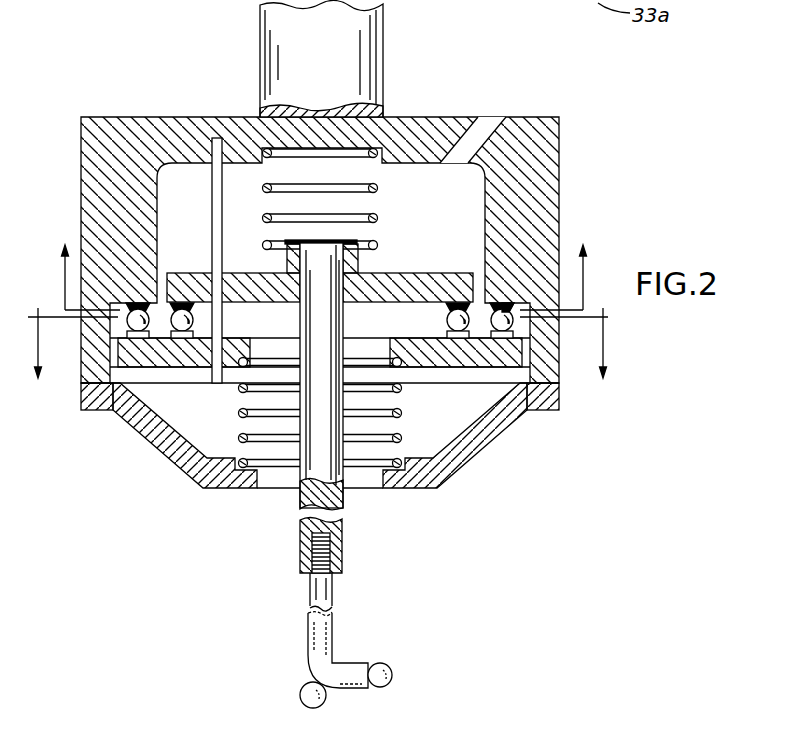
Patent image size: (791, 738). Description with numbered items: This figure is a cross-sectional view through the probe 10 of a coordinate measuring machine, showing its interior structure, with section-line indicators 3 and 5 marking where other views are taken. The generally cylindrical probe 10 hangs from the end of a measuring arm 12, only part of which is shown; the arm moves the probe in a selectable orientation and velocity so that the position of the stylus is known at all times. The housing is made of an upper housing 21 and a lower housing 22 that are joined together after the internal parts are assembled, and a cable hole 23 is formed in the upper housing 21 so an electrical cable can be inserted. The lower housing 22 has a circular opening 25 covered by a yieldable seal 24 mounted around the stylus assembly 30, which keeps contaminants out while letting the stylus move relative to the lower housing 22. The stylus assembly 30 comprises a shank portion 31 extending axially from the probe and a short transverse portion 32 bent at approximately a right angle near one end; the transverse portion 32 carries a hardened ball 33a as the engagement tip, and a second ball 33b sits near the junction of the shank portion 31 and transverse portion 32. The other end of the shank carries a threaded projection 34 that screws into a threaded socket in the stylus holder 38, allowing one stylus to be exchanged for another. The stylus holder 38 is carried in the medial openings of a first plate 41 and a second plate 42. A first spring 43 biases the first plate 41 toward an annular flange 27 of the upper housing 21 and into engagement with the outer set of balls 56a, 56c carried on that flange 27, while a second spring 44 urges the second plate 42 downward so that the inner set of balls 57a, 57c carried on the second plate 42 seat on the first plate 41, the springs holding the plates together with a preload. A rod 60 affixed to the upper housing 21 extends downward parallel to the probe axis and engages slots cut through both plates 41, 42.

The probe 10 is at (150, 547).
The measuring arm 12 is at (374, 64).
The upper housing 21 is at (135, 186).
The lower housing 22 is at (117, 411).
The cable hole 23 is at (483, 127).
The seal 24 is at (283, 482).
The circular opening 25 is at (383, 483).
The annular flange 27 is at (503, 303).
The stylus assembly 30 is at (356, 650).
The shank portion 31 is at (334, 593).
The transverse portion 32 is at (353, 664).
The ball 33a is at (393, 674).
The second ball 33b is at (303, 700).
The threaded projection 34 is at (300, 558).
The stylus holder 38 is at (333, 318).
The first plate 41 is at (180, 368).
The second plate 42 is at (396, 273).
The first spring 43 is at (240, 439).
The second spring 44 is at (264, 220).
The outer set ball 56a is at (500, 333).
The outer set ball 56c is at (126, 308).
The inner set ball 57a is at (445, 320).
The inner set ball 57c is at (195, 320).
The rod 60 is at (212, 186).
The section line 3 is at (319, 358).
The section line 5 is at (323, 263).